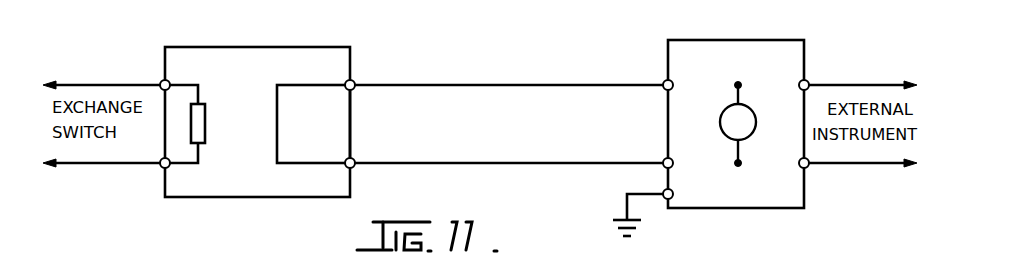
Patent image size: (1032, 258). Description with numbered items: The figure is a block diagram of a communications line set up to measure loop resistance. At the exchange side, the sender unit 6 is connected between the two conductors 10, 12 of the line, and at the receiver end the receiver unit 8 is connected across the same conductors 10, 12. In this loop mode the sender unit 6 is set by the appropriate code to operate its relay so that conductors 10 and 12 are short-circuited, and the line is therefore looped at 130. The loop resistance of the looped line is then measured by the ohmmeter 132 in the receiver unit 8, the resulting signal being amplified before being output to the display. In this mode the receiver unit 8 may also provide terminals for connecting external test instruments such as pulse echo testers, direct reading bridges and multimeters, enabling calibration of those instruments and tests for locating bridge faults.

The sender unit 6 is at (355, 63).
The receiver unit 8 is at (659, 57).
The conductor 10 is at (561, 83).
The conductor 12 is at (542, 165).
The loop 130 is at (278, 85).
The ohmmeter 132 is at (723, 112).